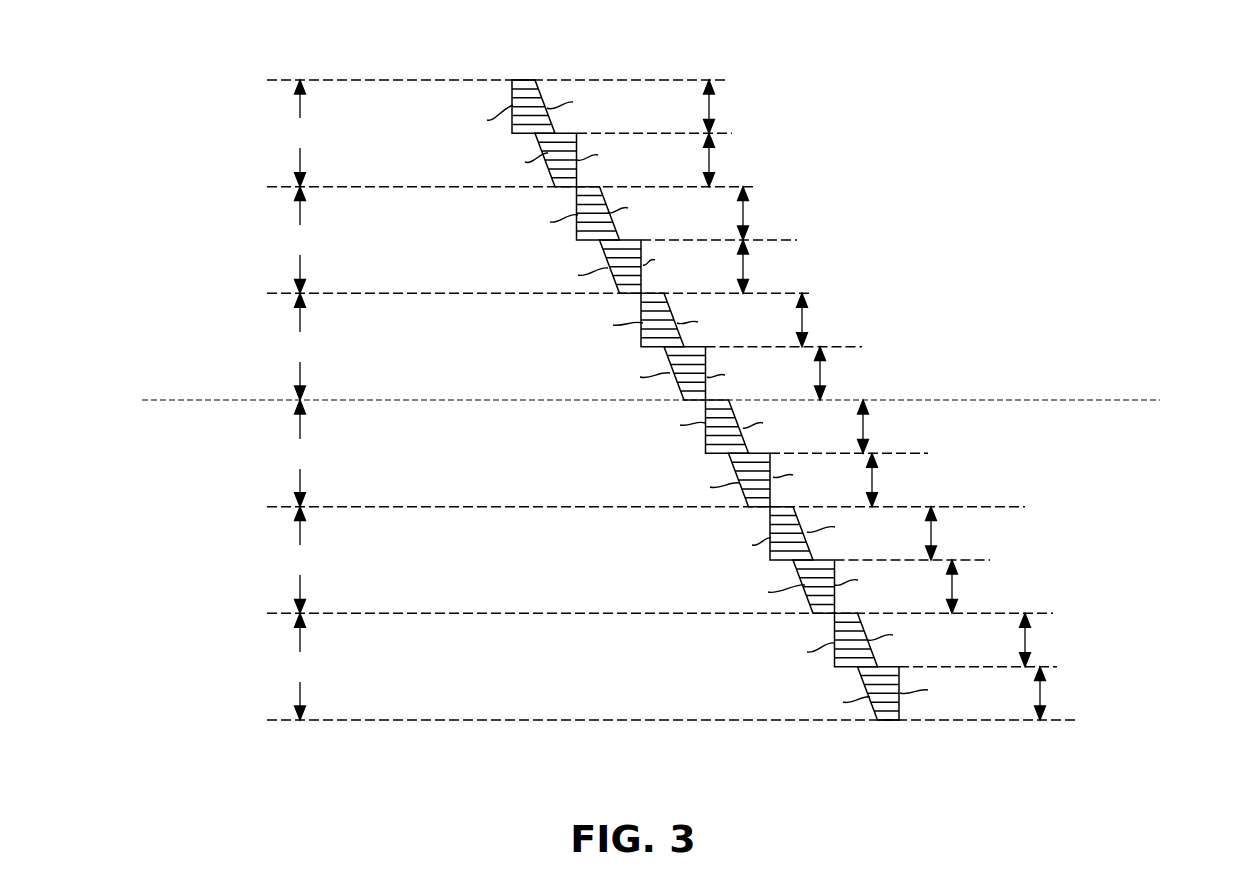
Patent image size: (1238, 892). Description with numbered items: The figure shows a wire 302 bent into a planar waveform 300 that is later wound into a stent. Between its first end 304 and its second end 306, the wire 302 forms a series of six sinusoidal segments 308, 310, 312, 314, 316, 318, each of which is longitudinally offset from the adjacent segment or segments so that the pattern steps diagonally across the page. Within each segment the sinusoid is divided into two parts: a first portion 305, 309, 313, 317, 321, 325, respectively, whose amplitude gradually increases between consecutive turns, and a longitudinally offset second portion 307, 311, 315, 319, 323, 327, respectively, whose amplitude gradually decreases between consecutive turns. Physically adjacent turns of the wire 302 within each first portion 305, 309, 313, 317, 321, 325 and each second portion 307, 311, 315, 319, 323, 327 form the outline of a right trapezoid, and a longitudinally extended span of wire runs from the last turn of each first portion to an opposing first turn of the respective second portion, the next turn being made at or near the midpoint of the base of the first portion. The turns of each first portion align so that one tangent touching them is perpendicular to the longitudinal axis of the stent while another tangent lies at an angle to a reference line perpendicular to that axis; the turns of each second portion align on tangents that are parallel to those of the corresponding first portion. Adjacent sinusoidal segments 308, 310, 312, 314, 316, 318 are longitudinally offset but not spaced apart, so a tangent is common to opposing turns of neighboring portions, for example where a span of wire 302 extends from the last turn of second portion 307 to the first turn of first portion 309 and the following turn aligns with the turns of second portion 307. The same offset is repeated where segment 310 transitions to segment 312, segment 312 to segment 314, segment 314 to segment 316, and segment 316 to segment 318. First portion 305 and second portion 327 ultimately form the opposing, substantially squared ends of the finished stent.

The planar waveform 300 is at (1017, 237).
The wire 302 is at (696, 449).
The first end 304 is at (512, 80).
The second end 306 is at (900, 721).
The first portion 305 is at (709, 106).
The second portion 307 is at (709, 159).
The sinusoidal segment 308 is at (298, 133).
The first portion 309 is at (743, 213).
The sinusoidal segment 310 is at (298, 240).
The second portion 311 is at (743, 266).
The sinusoidal segment 312 is at (298, 346).
The first portion 313 is at (802, 319).
The sinusoidal segment 314 is at (298, 453).
The second portion 315 is at (820, 373).
The sinusoidal segment 316 is at (298, 560).
The first portion 317 is at (863, 426).
The sinusoidal segment 318 is at (298, 666).
The second portion 319 is at (872, 479).
The first portion 321 is at (931, 533).
The second portion 323 is at (952, 586).
The first portion 325 is at (1025, 639).
The second portion 327 is at (1040, 693).